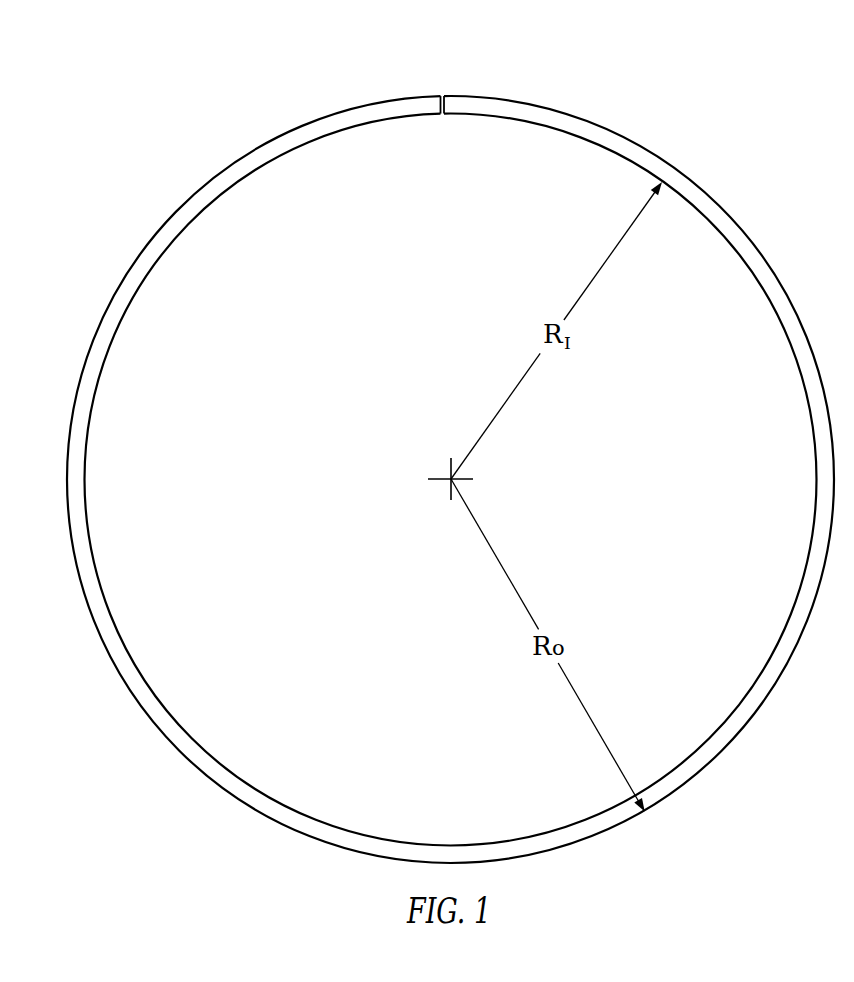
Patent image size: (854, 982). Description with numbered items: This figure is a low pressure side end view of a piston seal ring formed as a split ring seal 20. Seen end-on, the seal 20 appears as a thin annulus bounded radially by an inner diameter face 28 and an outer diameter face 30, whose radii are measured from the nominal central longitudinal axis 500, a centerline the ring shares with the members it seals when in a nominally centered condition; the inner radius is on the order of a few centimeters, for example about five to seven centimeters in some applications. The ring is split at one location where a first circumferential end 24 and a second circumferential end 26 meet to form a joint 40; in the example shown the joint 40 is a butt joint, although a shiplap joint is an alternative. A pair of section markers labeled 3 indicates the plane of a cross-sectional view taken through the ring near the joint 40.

The split ring seal 20 is at (433, 431).
The first circumferential end 24 is at (446, 100).
The second circumferential end 26 is at (427, 114).
The inner diameter face 28 is at (110, 404).
The outer diameter face 30 is at (63, 378).
The joint 40 is at (469, 94).
The central longitudinal axis 500 is at (448, 476).
The section line 3- 3 is at (336, 126).